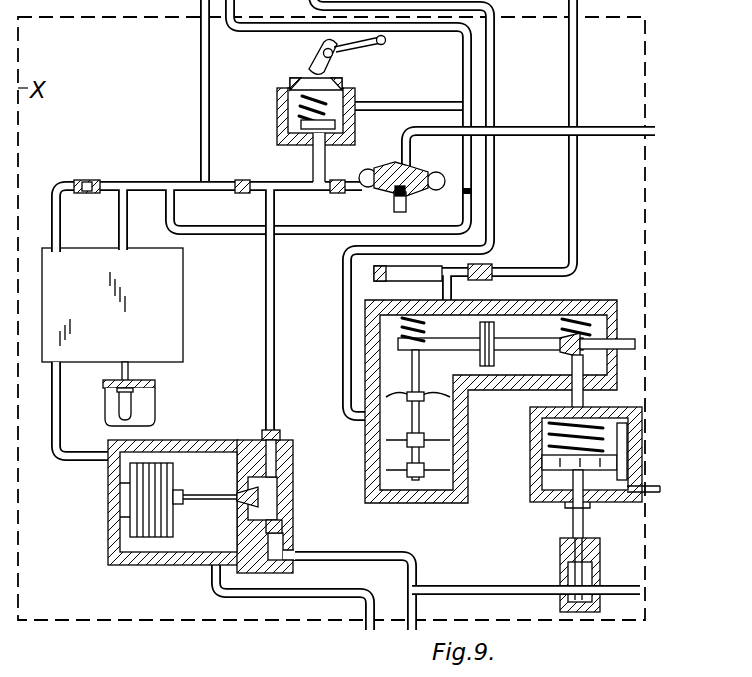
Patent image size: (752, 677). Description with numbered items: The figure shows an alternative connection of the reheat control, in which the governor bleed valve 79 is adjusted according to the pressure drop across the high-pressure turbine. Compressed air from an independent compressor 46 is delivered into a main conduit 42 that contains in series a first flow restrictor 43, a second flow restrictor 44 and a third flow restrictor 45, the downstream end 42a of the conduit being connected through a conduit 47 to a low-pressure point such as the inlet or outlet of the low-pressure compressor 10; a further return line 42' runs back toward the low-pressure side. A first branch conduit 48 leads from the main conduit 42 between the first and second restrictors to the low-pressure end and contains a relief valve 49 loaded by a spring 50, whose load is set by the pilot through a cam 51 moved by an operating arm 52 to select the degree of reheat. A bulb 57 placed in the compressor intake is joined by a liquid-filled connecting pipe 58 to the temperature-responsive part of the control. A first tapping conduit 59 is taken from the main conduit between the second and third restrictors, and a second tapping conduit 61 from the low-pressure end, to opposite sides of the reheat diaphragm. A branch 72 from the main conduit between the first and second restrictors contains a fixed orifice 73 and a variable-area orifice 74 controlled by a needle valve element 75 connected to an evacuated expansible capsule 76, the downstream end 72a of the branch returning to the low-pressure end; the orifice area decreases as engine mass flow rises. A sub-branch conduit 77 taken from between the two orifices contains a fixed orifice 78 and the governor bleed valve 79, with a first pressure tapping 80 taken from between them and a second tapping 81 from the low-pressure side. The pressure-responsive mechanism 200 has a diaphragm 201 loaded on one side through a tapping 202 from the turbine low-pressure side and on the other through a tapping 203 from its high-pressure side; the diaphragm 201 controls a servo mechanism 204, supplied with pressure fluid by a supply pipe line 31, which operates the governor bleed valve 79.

The low-pressure compressor 10 is at (156, 389).
The supply pipe line 31 is at (650, 493).
The main conduit 42 is at (209, 194).
The downstream end of the main conduit 42a is at (182, 236).
The return pipe 42' is at (348, 97).
The first flow restrictor 43 is at (338, 196).
The second flow restrictor 44 is at (246, 196).
The third flow restrictor 45 is at (89, 180).
The independent compressor 46 is at (392, 192).
The conduit 47 is at (514, 127).
The first branch conduit 48 is at (421, 103).
The relief valve 49 is at (304, 123).
The spring 50 is at (330, 112).
The cam 51 is at (318, 62).
The operating arm 52 is at (355, 56).
The bulb 57 is at (131, 410).
The connecting pipe 58 is at (128, 372).
The first tapping conduit 59 is at (200, 80).
The second tapping conduit 61 is at (466, 45).
The branch 72 is at (268, 303).
The downstream end of the branch 72a is at (70, 450).
The fixed orifice 73 is at (280, 447).
The variable-area orifice 74 is at (252, 480).
The needle valve element 75 is at (260, 497).
The evacuated expansible capsule 76 is at (133, 510).
The sub-branch conduit 77 is at (401, 551).
The fixed orifice 78 is at (283, 527).
The governor bleed valve 79 is at (568, 578).
The first pressure tapping 80 is at (410, 604).
The second tapping 81 is at (212, 588).
The pressure-responsive mechanism 200 is at (460, 505).
The diaphragm 201 is at (442, 398).
The tapping 202 is at (344, 262).
The tapping 203 is at (570, 267).
The servo mechanism 204 is at (530, 430).